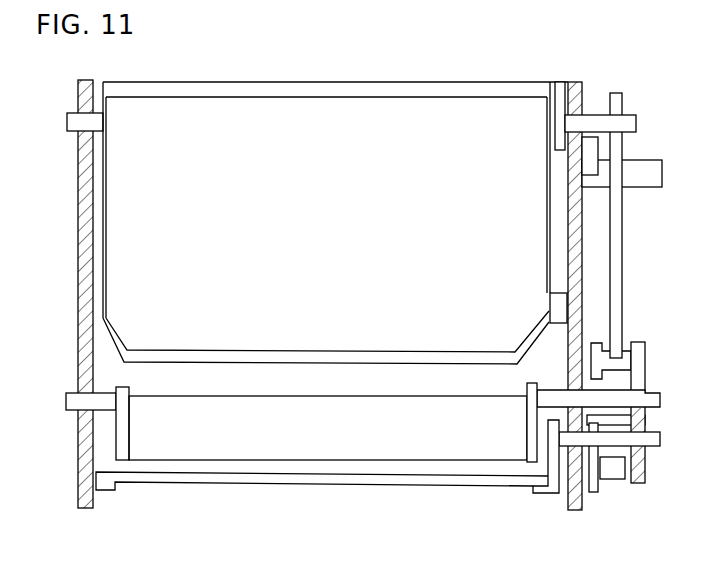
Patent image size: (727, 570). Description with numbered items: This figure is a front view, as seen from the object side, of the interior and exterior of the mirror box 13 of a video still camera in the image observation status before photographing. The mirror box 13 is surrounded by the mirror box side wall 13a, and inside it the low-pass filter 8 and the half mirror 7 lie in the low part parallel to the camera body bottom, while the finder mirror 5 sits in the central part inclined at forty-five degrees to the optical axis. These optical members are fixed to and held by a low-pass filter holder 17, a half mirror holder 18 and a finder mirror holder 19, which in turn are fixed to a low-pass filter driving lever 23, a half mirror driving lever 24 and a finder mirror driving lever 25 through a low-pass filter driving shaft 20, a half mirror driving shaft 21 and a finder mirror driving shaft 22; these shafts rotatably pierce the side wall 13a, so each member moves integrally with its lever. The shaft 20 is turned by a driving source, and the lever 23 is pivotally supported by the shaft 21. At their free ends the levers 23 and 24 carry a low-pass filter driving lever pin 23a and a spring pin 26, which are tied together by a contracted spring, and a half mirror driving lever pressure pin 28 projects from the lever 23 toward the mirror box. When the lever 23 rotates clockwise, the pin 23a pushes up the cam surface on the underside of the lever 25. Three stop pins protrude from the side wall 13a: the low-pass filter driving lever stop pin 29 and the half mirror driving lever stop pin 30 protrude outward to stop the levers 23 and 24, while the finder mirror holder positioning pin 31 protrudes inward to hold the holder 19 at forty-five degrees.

The finder mirror 5 is at (501, 99).
The half mirror 7 is at (422, 490).
The low-pass filter 8 is at (492, 440).
The mirror box 13 is at (102, 361).
The mirror box side wall 13a is at (78, 89).
The low-pass filter holder 17 is at (531, 460).
The half mirror holder 18 is at (552, 493).
The finder mirror holder 19 is at (561, 88).
The low-pass filter driving shaft 20 is at (625, 396).
The half mirror driving shaft 21 is at (660, 440).
The finder mirror driving shaft 22 is at (592, 122).
The low-pass filter driving lever 23 is at (640, 350).
The low-pass filter driving lever pin 23a is at (602, 364).
The half mirror driving lever 24 is at (595, 491).
The finder mirror driving lever 25 is at (618, 206).
The spring pin 26 is at (615, 470).
The half mirror driving lever pressure pin 28 is at (628, 420).
The low-pass filter driving lever stop pin 29 is at (664, 174).
The half mirror driving lever stop pin 30 is at (592, 150).
The finder mirror holder positioning pin 31 is at (560, 307).